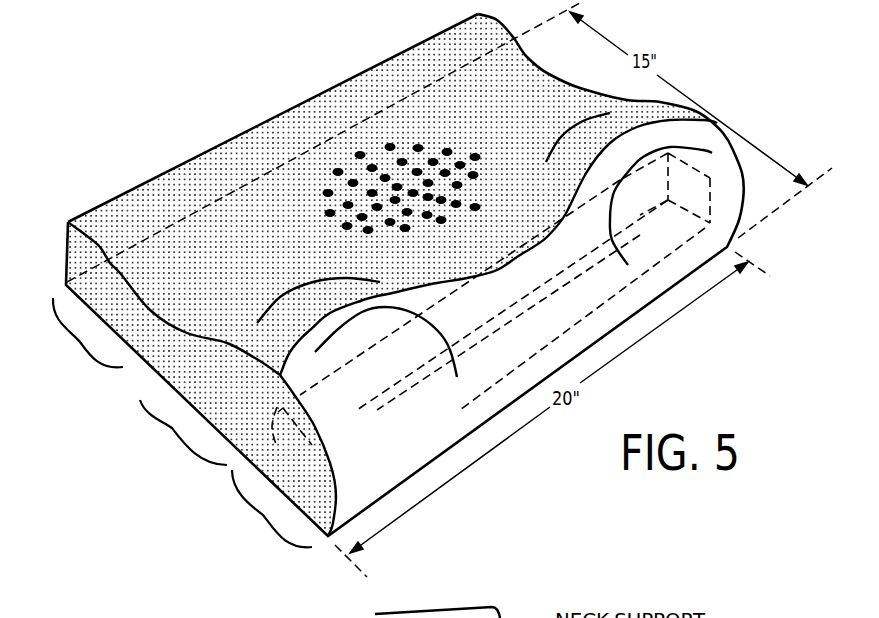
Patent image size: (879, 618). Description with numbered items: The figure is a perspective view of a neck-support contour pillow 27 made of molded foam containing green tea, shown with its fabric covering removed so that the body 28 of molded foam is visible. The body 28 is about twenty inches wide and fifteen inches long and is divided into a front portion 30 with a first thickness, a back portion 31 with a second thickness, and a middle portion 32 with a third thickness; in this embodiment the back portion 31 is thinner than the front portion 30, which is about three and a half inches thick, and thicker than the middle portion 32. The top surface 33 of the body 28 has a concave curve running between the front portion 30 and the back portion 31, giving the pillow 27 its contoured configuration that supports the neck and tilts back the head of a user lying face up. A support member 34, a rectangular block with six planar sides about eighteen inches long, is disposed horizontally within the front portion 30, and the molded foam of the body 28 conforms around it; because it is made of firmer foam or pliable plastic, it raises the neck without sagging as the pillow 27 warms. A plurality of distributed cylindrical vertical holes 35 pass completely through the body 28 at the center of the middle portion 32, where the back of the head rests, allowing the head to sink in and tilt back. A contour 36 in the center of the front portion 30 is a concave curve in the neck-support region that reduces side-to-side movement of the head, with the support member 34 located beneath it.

The neck-support contour pillow 27 is at (227, 105).
The body 28 is at (142, 181).
The front portion 30 is at (258, 521).
The back portion 31 is at (75, 348).
The middle portion 32 is at (171, 441).
The top surface 33 is at (542, 118).
The support member 34 is at (708, 183).
The vertical holes 35 is at (408, 140).
The contour 36 is at (520, 253).